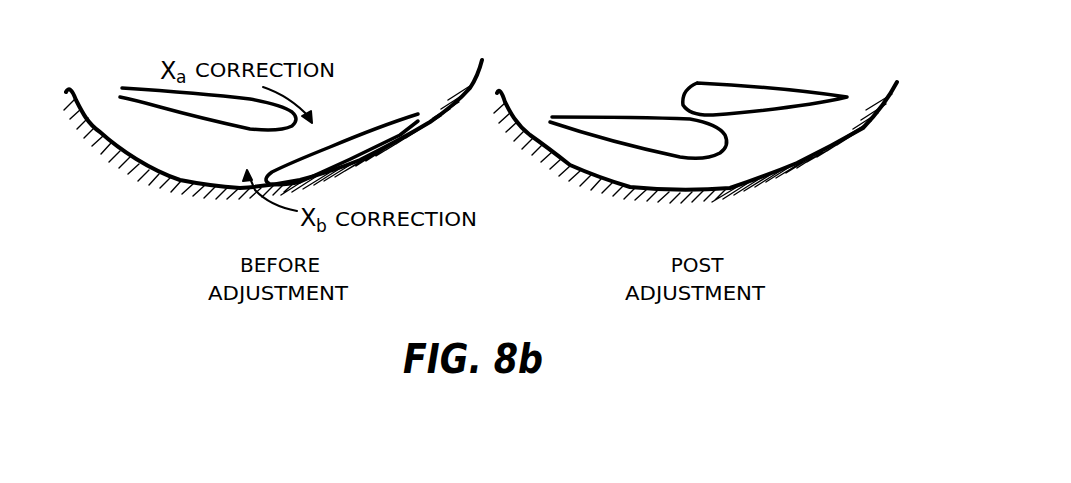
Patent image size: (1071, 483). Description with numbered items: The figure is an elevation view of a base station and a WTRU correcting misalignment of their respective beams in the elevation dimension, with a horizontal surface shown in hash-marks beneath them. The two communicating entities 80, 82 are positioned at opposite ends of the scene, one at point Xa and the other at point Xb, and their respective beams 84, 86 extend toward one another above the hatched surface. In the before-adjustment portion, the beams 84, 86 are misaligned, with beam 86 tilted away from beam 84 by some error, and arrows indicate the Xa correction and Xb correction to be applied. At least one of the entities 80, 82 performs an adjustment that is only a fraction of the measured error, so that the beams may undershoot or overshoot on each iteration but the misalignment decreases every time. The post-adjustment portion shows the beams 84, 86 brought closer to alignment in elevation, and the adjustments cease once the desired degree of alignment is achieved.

The communicating entity 80 is at (97, 72).
The communicating entity 82 is at (432, 86).
The beam 84 is at (183, 118).
The beam 86 is at (378, 121).